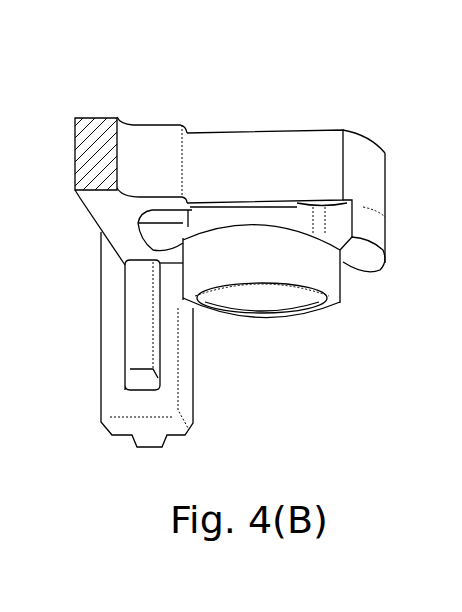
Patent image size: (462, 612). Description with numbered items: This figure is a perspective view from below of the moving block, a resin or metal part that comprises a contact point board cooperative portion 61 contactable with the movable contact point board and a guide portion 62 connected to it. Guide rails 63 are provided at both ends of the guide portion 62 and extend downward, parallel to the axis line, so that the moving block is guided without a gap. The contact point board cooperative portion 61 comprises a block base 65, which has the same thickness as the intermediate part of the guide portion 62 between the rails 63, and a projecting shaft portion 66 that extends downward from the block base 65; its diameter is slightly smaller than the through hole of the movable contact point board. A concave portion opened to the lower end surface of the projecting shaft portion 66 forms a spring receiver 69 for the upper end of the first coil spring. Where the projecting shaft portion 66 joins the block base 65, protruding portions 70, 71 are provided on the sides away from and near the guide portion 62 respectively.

The contact point board cooperative portion 61 is at (387, 153).
The guide portion 62 is at (97, 130).
The guide rails 63 is at (108, 333).
The block base 65 is at (360, 138).
The projecting shaft portion 66 is at (347, 277).
The spring receiver 69 is at (282, 305).
The protruding portion 70 is at (373, 265).
The protruding portion 71 is at (137, 220).